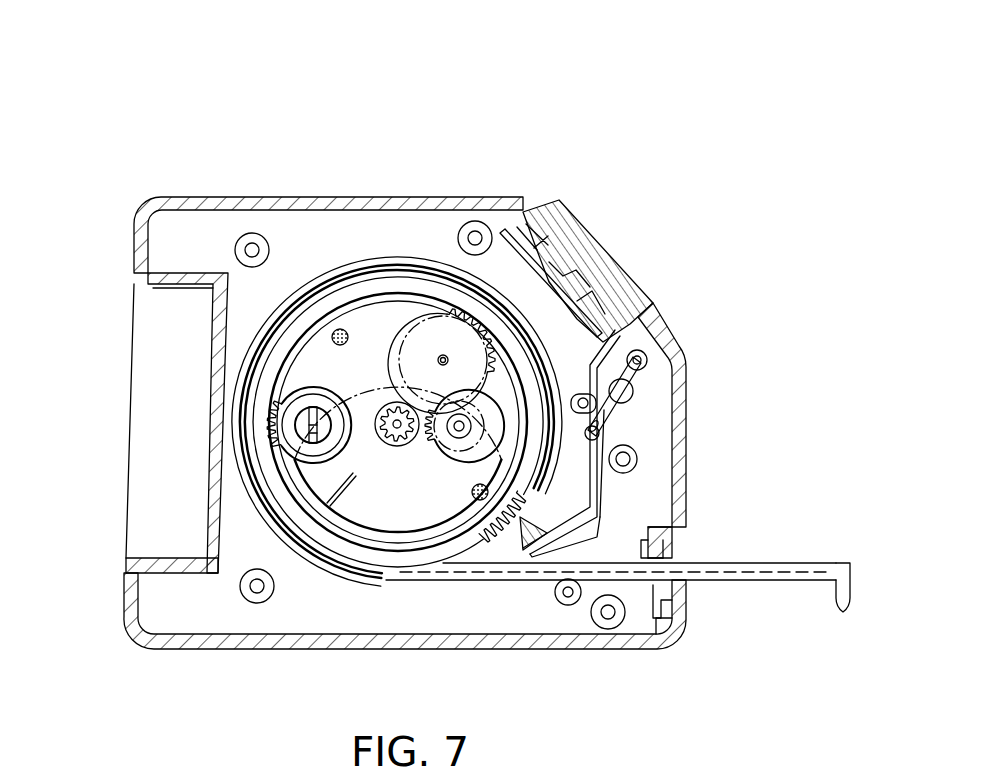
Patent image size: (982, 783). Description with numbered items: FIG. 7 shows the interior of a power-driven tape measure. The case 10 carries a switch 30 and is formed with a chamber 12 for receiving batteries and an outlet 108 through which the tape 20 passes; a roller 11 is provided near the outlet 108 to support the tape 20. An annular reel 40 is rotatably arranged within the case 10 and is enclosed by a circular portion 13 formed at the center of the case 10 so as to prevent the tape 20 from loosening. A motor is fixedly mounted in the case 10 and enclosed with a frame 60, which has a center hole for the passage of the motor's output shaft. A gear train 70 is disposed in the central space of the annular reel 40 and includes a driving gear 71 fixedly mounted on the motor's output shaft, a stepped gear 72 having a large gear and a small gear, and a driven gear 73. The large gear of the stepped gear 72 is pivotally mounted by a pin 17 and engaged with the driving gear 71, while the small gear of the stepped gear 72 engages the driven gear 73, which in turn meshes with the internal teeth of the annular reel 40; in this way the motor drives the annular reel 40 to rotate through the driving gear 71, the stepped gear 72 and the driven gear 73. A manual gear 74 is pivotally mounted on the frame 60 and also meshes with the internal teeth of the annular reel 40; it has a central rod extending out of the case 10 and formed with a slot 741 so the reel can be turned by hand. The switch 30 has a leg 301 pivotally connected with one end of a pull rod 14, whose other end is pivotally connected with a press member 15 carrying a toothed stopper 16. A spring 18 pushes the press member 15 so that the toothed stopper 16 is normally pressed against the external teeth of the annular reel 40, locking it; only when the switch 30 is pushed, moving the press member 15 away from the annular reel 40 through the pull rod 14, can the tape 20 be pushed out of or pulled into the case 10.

The case 10 is at (377, 187).
The roller 11 is at (570, 603).
The chamber 12 is at (148, 521).
The circular portion 13 is at (323, 280).
The pull rod 14 is at (597, 404).
The press member 15 is at (592, 489).
The toothed stopper 16 is at (528, 548).
The pin 17 is at (602, 402).
The spring 18 is at (595, 522).
The tape 20 is at (795, 575).
The switch 30 is at (585, 263).
The leg 301 is at (644, 338).
The annular reel 40 is at (313, 541).
The frame 60 is at (367, 513).
The gear train 70 is at (470, 433).
The driving gear 71 is at (396, 447).
The stepped gear 72 is at (602, 386).
The driven gear 73 is at (410, 350).
The manual gear 74 is at (277, 403).
The slot 741 is at (308, 436).
The outlet 108 is at (651, 559).